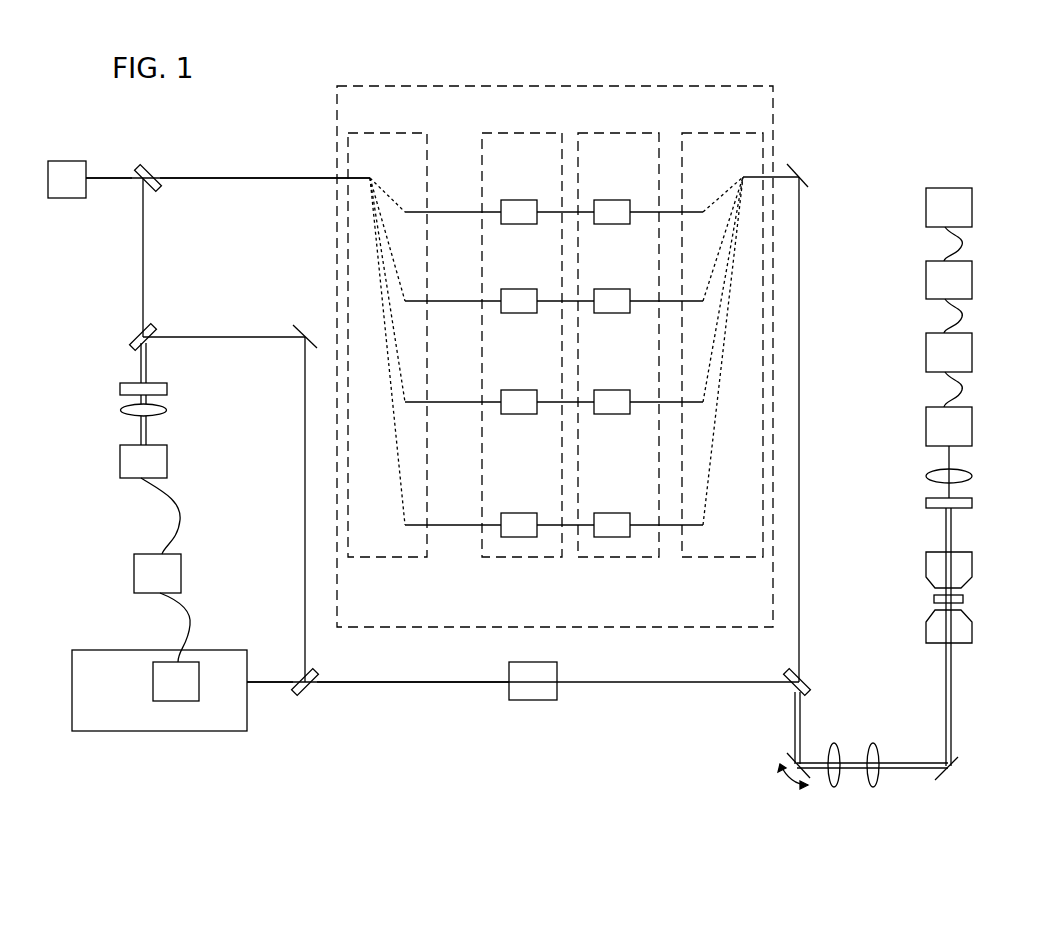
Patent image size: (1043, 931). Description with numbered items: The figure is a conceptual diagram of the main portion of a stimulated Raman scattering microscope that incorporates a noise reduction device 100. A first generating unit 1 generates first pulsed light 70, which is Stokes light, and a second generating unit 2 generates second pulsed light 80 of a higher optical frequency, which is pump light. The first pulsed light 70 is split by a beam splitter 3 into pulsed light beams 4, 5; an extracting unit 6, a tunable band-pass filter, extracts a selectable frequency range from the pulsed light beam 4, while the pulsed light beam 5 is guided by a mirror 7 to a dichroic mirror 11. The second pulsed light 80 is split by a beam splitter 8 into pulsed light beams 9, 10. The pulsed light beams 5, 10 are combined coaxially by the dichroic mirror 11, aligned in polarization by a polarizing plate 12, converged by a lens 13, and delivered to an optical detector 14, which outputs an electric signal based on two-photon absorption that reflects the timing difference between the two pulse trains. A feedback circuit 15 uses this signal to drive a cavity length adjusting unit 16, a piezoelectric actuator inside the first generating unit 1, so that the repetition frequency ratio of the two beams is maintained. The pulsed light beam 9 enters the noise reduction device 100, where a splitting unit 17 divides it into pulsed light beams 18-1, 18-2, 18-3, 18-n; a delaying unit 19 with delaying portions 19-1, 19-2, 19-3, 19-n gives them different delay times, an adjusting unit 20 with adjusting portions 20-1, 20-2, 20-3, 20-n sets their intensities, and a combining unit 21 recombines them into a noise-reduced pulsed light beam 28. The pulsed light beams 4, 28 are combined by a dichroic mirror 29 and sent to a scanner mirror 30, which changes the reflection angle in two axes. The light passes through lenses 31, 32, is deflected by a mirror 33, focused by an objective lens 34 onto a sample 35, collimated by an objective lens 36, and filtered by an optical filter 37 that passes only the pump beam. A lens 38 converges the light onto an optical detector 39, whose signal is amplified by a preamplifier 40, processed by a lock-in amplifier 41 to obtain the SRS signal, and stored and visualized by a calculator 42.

The first generating unit 1 is at (100, 650).
The second generating unit 2 is at (69, 161).
The beam splitter 3 is at (309, 690).
The pulsed light beam 4 is at (413, 682).
The pulsed light beam 5 is at (305, 568).
The extracting unit 6 is at (533, 700).
The mirror 7 is at (304, 325).
The beam splitter 8 is at (152, 170).
The pulsed light beam 9 is at (236, 178).
The pulsed light beam 10 is at (143, 236).
The dichroic mirror 11 is at (139, 333).
The polarizing plate 12 is at (120, 388).
The lens 13 is at (120, 410).
The optical detector 14 is at (120, 458).
The feedback circuit 15 is at (134, 574).
The cavity length adjusting unit 16 is at (153, 682).
The splitting unit 17 is at (388, 557).
The pulsed light beam 18-1 is at (455, 212).
The pulsed light beam 18-2 is at (455, 301).
The pulsed light beam 18-3 is at (455, 402).
The pulsed light beam 18-n is at (455, 525).
The delaying unit 19 is at (522, 557).
The delaying portion 19-1 is at (520, 200).
The delaying portion 19-2 is at (520, 289).
The delaying portion 19-3 is at (520, 390).
The delaying portion 19-n is at (520, 513).
The adjusting unit 20 is at (618, 557).
The adjusting portion 20-1 is at (612, 200).
The adjusting portion 20-2 is at (612, 289).
The adjusting portion 20-3 is at (612, 390).
The adjusting portion 20-n is at (612, 513).
The combining unit 21 is at (722, 557).
The pulsed light beam 28 is at (799, 306).
The dichroic mirror 29 is at (806, 684).
The scanner mirror 30 is at (788, 752).
The lens 31 is at (839, 787).
The lens 32 is at (878, 787).
The mirror 33 is at (945, 776).
The objective lens 34 is at (972, 630).
The sample 35 is at (963, 598).
The objective lens 36 is at (972, 565).
The optical filter 37 is at (972, 503).
The lens 38 is at (972, 476).
The optical detector 39 is at (972, 427).
The preamplifier 40 is at (972, 353).
The lock-in amplifier 41 is at (972, 280).
The calculator 42 is at (972, 207).
The first pulsed light 70 is at (271, 682).
The second pulsed light 80 is at (111, 178).
The noise reduction device 100 is at (617, 627).